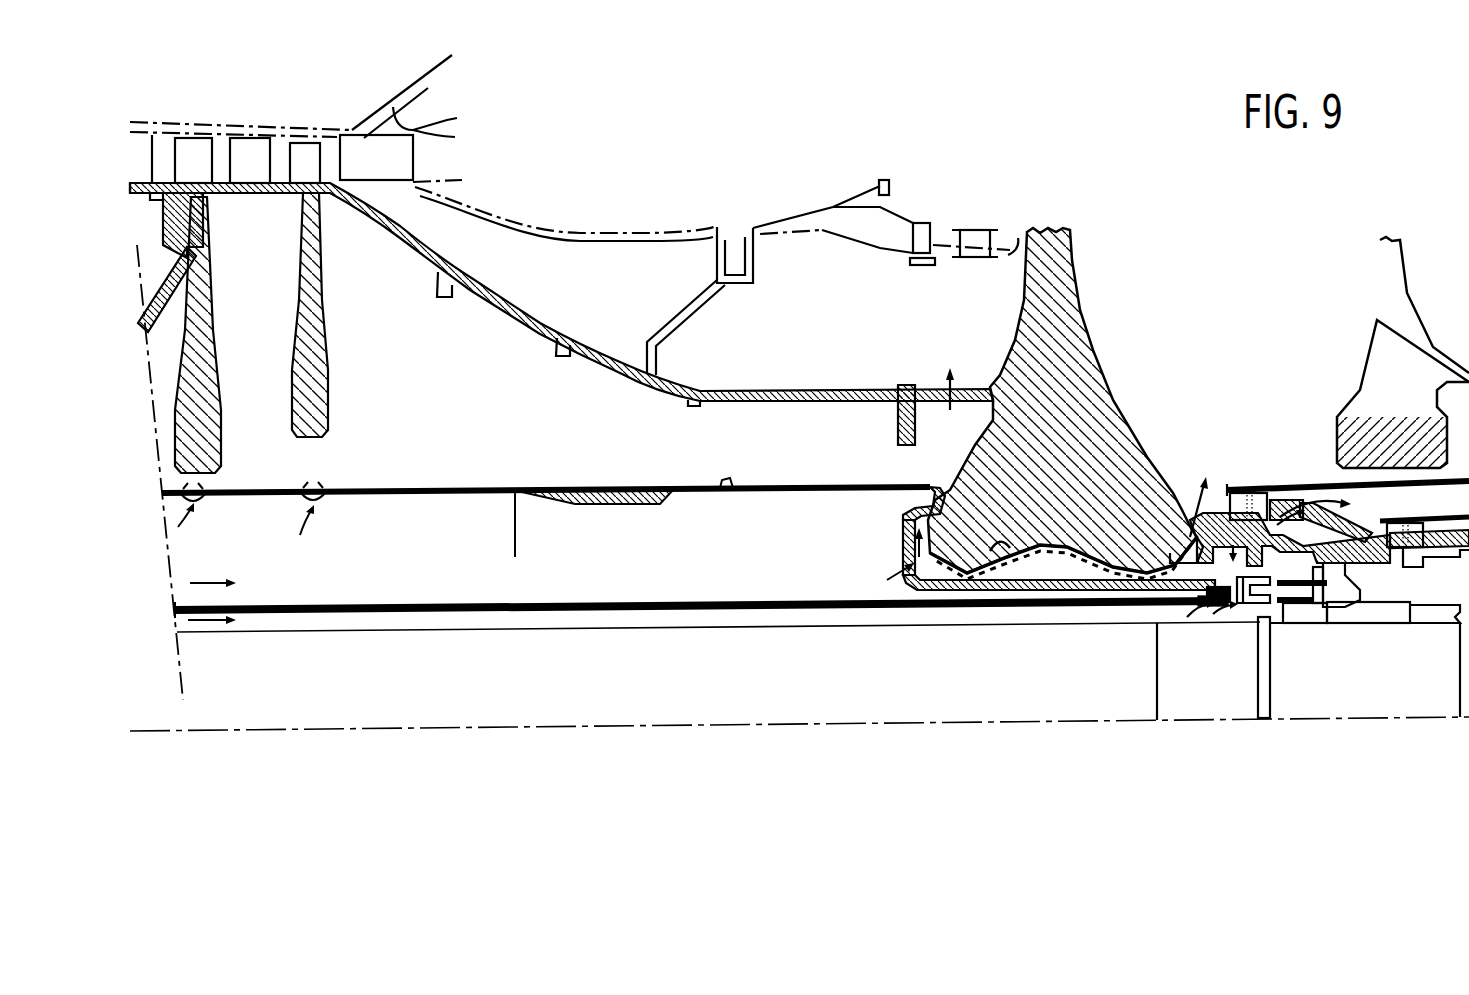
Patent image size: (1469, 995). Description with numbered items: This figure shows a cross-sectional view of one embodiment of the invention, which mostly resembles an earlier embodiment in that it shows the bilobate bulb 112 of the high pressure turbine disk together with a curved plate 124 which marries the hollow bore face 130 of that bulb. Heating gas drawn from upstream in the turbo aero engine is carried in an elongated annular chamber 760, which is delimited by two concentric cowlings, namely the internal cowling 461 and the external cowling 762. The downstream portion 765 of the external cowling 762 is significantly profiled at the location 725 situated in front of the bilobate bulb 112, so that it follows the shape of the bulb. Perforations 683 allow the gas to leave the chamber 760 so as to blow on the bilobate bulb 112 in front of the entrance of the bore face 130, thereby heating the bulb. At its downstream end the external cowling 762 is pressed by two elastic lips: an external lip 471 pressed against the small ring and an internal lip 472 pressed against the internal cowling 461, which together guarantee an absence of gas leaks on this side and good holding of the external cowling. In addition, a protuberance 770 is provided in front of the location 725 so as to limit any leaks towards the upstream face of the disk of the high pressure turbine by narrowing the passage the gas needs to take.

The bulb 112 is at (1053, 457).
The plate 124 is at (1008, 560).
The bore face 130 is at (1047, 557).
The internal cowling 461 is at (580, 614).
The external lip 471 is at (1215, 502).
The internal lip 472 is at (1210, 600).
The perforations 683 is at (900, 568).
The location 725 is at (900, 525).
The chamber 760 is at (453, 548).
The external cowling 762 is at (490, 480).
The downstream portion 765 is at (763, 482).
The protuberance 770 is at (925, 473).